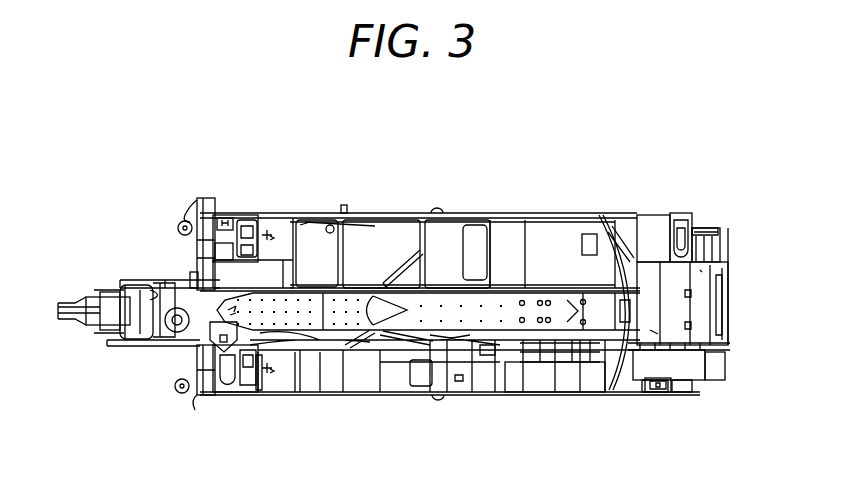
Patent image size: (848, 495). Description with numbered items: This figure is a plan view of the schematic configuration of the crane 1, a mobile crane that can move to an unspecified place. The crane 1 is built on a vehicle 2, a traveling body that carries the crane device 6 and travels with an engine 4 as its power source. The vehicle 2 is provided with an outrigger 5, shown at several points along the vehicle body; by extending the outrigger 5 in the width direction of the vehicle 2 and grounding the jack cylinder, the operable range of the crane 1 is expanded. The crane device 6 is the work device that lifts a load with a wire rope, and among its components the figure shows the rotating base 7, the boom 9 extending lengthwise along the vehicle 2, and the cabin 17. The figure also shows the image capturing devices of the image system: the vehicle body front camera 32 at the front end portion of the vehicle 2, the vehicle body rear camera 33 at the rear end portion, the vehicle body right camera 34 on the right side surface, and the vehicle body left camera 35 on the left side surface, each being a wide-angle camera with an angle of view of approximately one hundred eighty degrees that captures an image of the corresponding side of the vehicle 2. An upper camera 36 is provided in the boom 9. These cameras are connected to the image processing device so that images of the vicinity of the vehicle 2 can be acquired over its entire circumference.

The crane 1 is at (424, 258).
The vehicle 2 is at (718, 400).
The engine 4 is at (725, 262).
The outrigger 5 is at (244, 215).
The crane device 6 is at (605, 170).
The rotating base 7 is at (548, 375).
The boom 9 is at (120, 239).
The cabin 17 is at (378, 215).
The vehicle body front camera 32 is at (193, 275).
The vehicle body rear camera 33 is at (730, 300).
The vehicle body right camera 34 is at (438, 212).
The vehicle body left camera 35 is at (437, 400).
The upper camera 36 is at (262, 395).